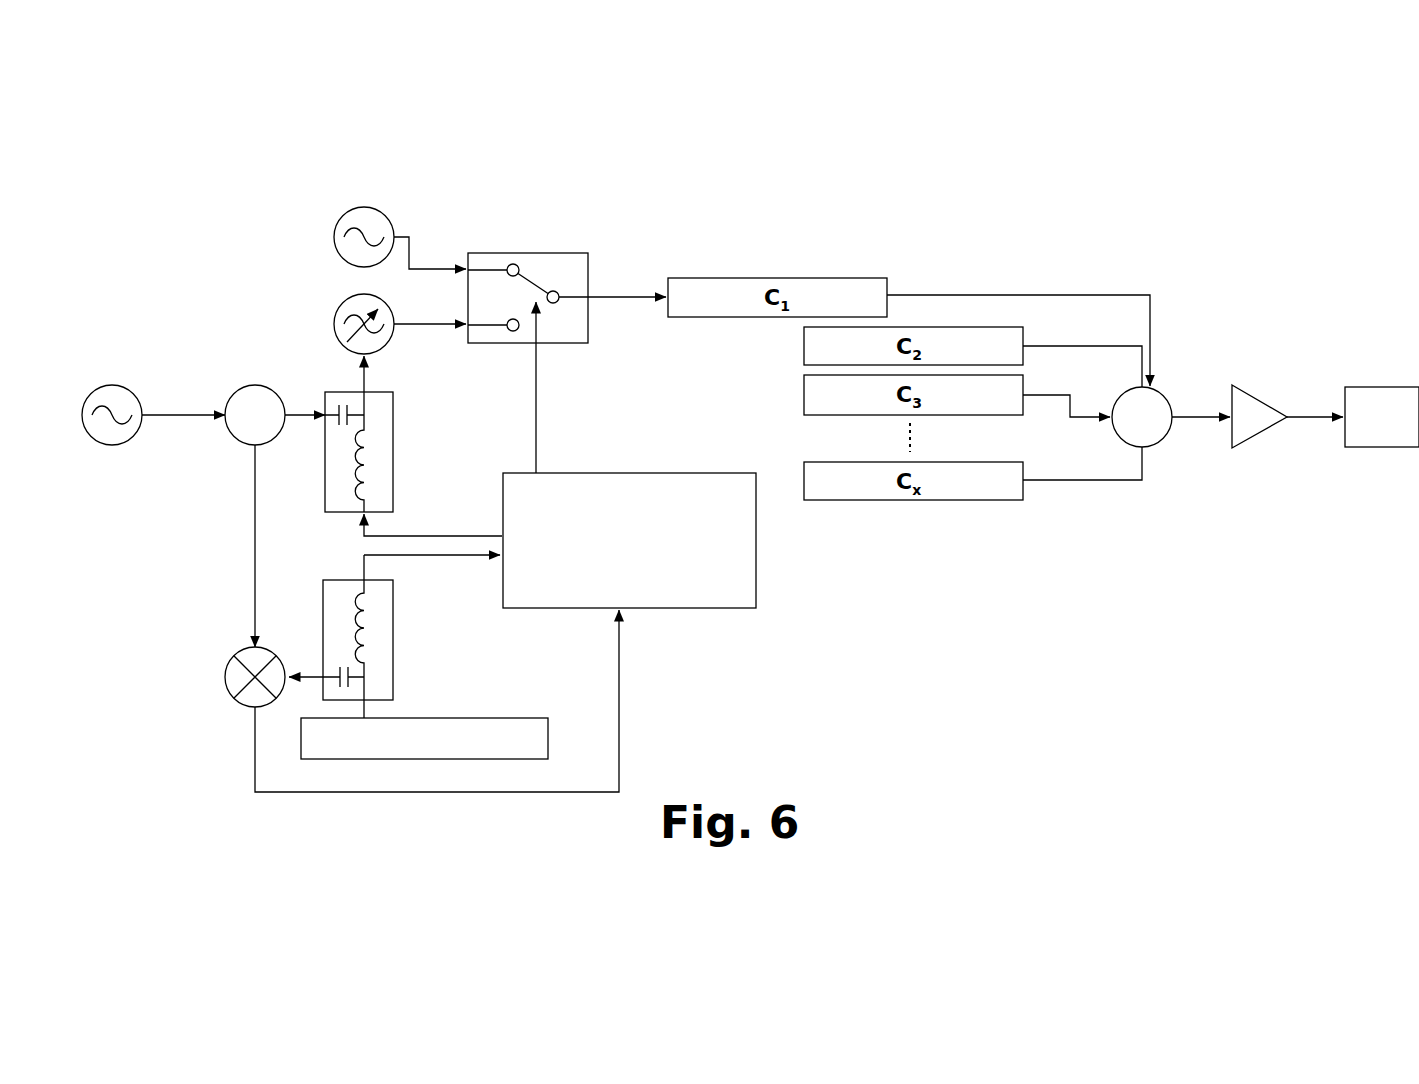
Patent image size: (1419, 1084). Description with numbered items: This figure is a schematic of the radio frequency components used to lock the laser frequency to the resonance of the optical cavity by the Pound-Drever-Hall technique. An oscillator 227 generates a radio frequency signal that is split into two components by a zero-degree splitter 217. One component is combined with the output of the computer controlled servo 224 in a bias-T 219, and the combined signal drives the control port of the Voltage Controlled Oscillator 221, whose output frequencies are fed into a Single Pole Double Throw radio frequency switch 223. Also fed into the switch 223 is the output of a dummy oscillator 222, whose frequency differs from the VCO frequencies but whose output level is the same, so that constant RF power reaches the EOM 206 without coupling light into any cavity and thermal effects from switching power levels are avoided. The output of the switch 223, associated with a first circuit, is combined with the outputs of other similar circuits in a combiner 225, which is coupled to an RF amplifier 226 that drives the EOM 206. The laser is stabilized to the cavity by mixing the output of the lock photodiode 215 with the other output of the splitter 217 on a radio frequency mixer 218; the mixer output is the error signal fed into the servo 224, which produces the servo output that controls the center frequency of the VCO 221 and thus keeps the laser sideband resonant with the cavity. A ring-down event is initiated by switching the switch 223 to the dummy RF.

The oscillator 227 is at (122, 445).
The zero-degree splitter 217 is at (245, 445).
The radio frequency mixer 218 is at (225, 677).
The bias-T 219 is at (337, 392).
The Voltage Controlled Oscillator 221 is at (345, 300).
The dummy oscillator 222 is at (362, 207).
The Single Pole Double Throw radio frequency switch 223 is at (523, 253).
The computer controlled servo 224 is at (505, 632).
The combiner 225 is at (1165, 395).
The RF amplifier 226 is at (1255, 437).
The EOM 206 is at (1382, 417).
The lock photodiode 215 is at (418, 657).